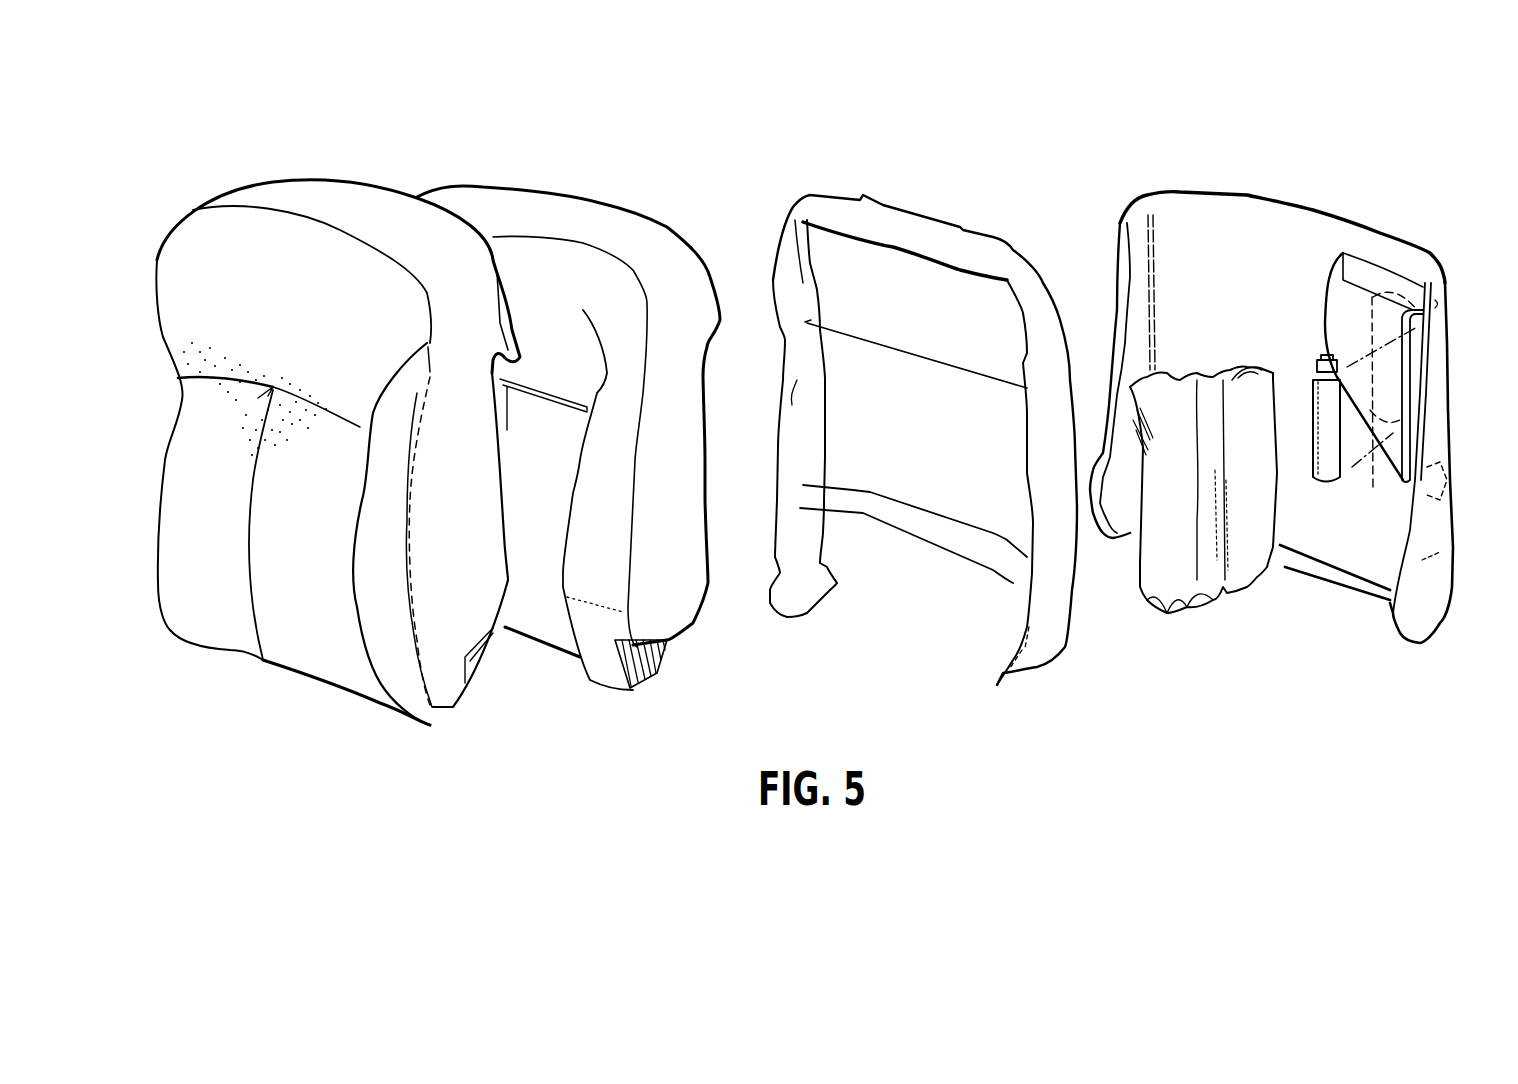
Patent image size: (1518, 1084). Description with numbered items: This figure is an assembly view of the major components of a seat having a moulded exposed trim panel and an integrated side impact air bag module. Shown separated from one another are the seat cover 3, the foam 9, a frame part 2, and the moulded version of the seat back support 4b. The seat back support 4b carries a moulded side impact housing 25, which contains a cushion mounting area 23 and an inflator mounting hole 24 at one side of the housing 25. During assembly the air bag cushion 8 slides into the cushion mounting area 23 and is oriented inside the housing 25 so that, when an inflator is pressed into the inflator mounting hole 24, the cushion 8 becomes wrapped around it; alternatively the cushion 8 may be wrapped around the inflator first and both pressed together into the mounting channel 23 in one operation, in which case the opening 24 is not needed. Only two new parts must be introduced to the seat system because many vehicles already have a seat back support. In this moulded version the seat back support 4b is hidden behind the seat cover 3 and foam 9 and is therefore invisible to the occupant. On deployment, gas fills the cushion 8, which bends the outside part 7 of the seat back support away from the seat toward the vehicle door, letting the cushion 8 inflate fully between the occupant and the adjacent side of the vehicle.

The seat cover 3 is at (450, 687).
The foam 9 is at (658, 623).
The seat back frame 2 is at (1043, 640).
The seat back support 4b is at (1280, 197).
The moulded side impact housing 25 is at (1352, 253).
The cushion mounting area 23 is at (1417, 380).
The inflator mounting hole 24 is at (1373, 490).
The outside part 7 is at (1320, 480).
The air bag cushion 8 is at (1173, 613).